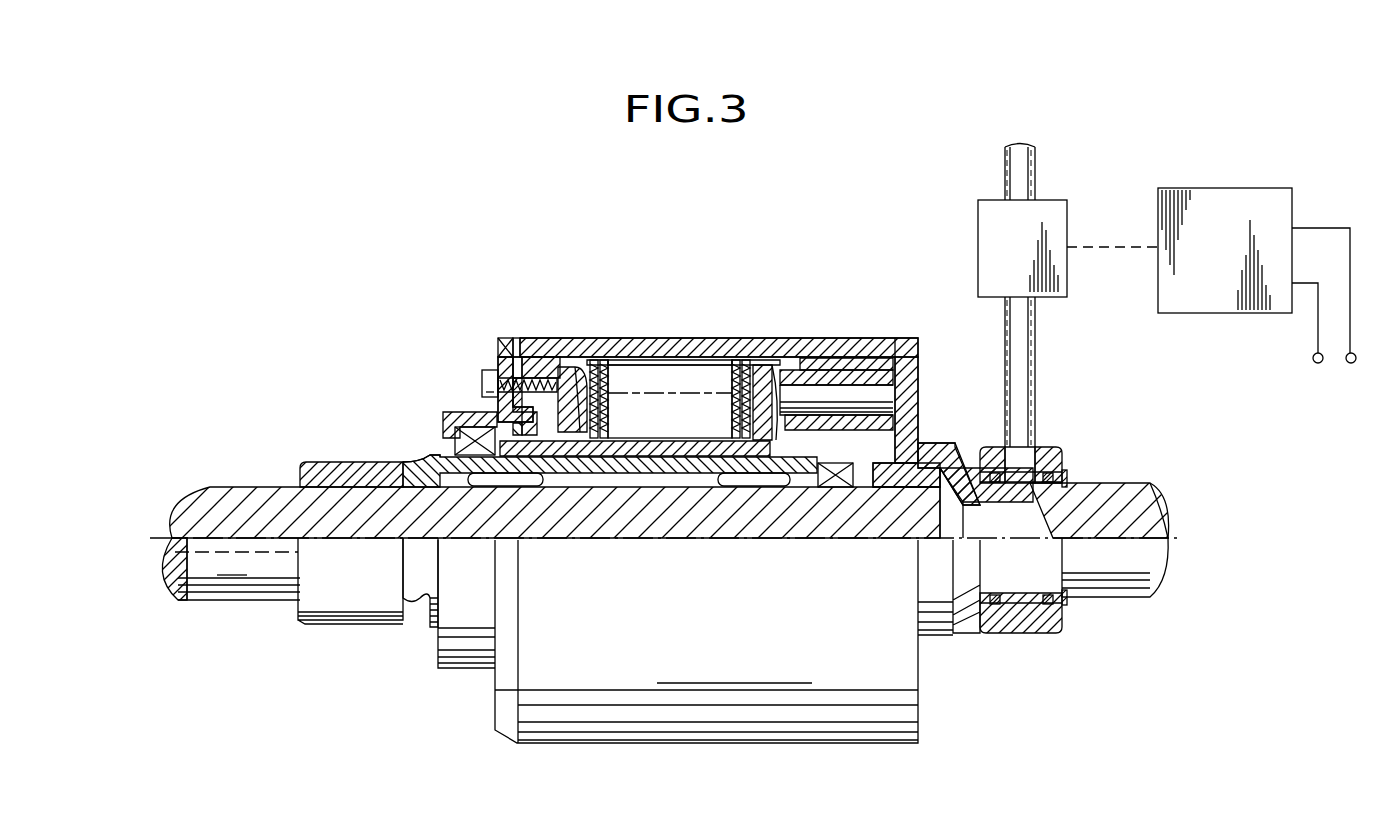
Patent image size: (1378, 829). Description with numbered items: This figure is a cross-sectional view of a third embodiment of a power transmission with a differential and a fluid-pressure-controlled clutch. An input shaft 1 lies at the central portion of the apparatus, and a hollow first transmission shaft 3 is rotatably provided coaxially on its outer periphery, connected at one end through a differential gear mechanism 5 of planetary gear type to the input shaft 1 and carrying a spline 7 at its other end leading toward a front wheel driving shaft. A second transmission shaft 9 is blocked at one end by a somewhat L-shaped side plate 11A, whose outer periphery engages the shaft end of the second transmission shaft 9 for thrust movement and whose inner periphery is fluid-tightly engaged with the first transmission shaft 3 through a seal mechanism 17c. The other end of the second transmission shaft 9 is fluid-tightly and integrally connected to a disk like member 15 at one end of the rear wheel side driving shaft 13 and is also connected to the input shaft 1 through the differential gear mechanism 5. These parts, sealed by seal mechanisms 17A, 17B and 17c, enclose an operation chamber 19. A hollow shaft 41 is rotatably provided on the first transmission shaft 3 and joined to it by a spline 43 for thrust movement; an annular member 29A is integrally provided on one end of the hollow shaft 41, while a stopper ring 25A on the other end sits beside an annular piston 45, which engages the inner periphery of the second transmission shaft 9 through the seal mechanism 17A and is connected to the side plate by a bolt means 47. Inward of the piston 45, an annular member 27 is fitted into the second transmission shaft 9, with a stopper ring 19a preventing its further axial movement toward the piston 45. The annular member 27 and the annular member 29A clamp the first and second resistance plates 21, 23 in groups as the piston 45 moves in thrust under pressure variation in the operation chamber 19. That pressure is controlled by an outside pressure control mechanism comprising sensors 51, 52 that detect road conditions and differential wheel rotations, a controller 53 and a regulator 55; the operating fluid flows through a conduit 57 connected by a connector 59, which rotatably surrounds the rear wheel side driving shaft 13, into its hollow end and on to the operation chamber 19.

The input shaft 1 is at (246, 492).
The first transmission shaft 3 is at (433, 462).
The differential gear mechanism 5 is at (882, 362).
The spline 7 is at (338, 470).
The second transmission shaft 9 is at (724, 345).
The side plate 11A is at (488, 372).
The rear wheel side driving shaft 13 is at (1110, 485).
The disk like member 15 is at (918, 372).
The seal mechanism 17A is at (543, 355).
The seal mechanism 17B is at (448, 415).
The seal mechanism 17c is at (842, 487).
The operation chamber 19 is at (585, 430).
The stopper ring 19a is at (568, 380).
The first resistance plates 21 is at (618, 370).
The second resistance plates 23 is at (596, 385).
The stopper ring 25A is at (497, 385).
The annular member 27 is at (598, 365).
The annular member 29A is at (762, 378).
The hollow shaft 41 is at (685, 447).
The spline 43 is at (750, 450).
The annular piston 45 is at (520, 345).
The bolt means 47 is at (483, 378).
The sensor 51 is at (1353, 364).
The sensor 52 is at (1318, 364).
The controller 53 is at (1237, 192).
The regulator 55 is at (1045, 200).
The conduit 57 is at (1036, 338).
The connector 59 is at (1033, 513).